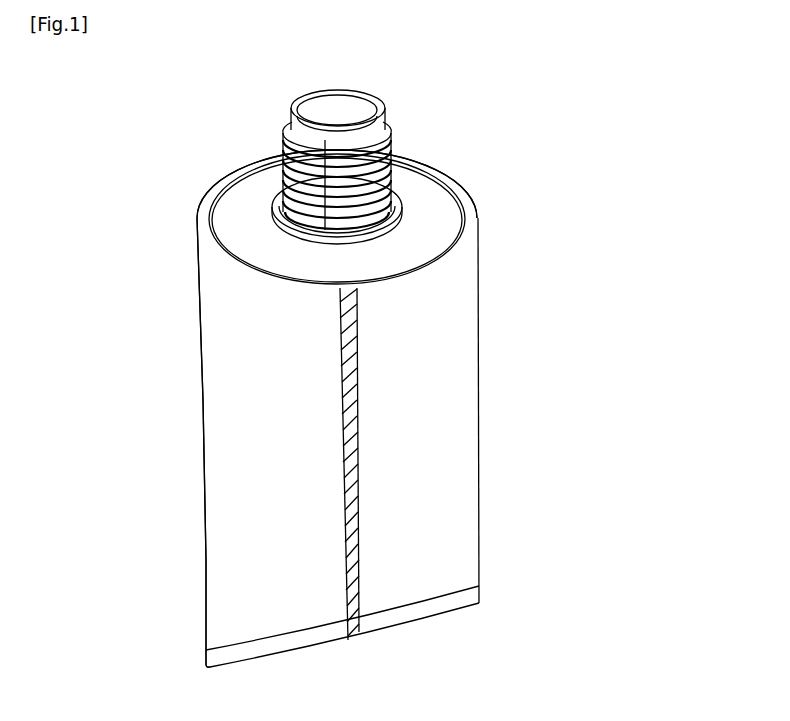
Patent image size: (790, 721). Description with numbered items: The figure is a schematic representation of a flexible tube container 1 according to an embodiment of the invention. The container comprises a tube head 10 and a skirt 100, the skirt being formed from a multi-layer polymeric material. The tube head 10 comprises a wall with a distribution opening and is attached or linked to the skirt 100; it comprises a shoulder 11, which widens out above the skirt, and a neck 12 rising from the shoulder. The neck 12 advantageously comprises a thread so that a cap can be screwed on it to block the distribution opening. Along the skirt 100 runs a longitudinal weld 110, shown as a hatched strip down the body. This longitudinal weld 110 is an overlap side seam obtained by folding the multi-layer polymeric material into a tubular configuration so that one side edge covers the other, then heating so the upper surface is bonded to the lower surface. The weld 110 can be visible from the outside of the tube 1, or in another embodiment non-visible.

The flexible tube container 1 is at (632, 260).
The tube head 10 is at (256, 184).
The shoulder 11 is at (425, 180).
The neck 12 is at (387, 135).
The skirt 100 is at (455, 533).
The longitudinal weld 110 is at (357, 442).